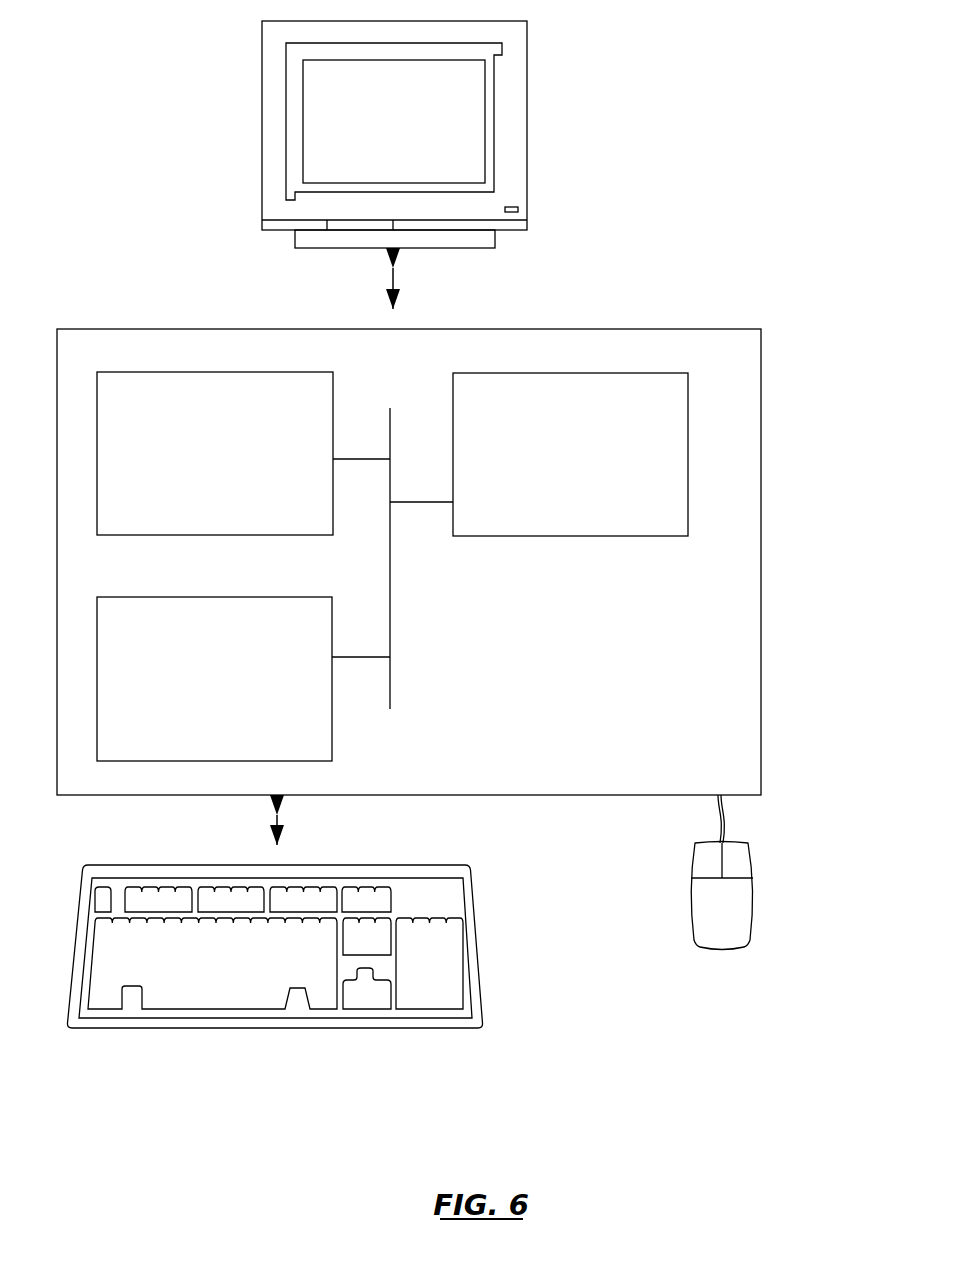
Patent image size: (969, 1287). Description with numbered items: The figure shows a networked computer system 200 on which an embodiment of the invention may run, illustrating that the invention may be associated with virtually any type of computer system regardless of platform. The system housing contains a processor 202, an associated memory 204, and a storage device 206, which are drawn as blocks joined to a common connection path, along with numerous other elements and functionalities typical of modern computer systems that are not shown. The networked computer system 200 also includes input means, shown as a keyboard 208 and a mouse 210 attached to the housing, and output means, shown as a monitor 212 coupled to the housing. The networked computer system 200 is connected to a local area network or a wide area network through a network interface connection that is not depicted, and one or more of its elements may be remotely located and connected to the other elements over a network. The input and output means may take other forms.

The networked computer system 200 is at (773, 183).
The processor 202 is at (571, 466).
The memory 204 is at (193, 466).
The storage device 206 is at (189, 691).
The keyboard 208 is at (183, 987).
The mouse 210 is at (700, 917).
The monitor 212 is at (371, 138).